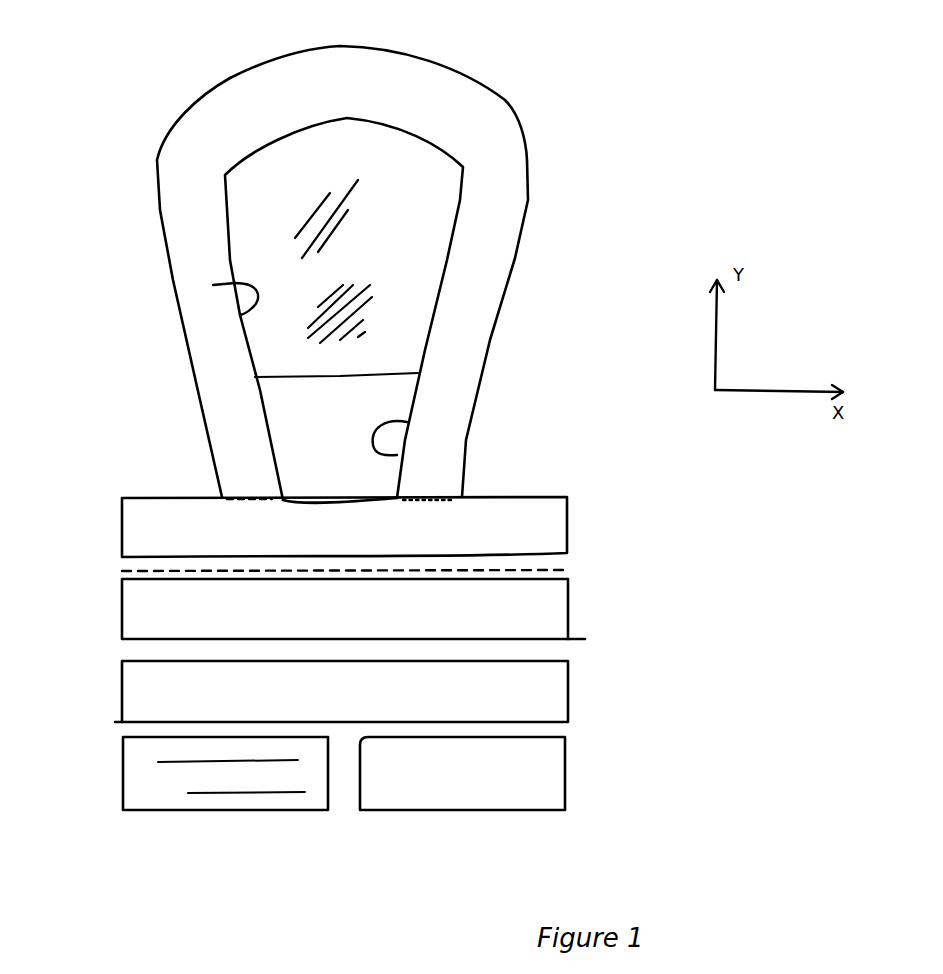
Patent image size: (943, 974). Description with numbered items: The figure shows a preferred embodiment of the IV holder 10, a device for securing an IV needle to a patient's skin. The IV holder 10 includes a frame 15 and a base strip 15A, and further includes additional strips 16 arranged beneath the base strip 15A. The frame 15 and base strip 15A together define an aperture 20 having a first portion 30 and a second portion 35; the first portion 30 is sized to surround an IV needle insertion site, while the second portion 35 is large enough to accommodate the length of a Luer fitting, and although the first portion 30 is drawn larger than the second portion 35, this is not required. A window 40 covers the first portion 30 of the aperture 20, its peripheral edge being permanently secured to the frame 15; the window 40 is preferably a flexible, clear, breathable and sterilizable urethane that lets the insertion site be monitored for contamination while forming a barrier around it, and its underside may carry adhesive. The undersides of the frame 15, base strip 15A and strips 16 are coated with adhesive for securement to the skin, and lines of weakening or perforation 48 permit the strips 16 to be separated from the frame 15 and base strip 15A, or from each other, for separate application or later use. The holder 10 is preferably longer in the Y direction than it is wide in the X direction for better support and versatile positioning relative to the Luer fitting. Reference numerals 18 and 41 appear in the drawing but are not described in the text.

The IV holder 10 is at (123, 96).
The frame 15 is at (420, 90).
The base strip 15A is at (547, 538).
The strips 16 is at (557, 692).
The information field 18 is at (290, 798).
The aperture 20 is at (418, 295).
The first portion 30 is at (217, 285).
The second portion 35 is at (373, 453).
The window 40 is at (435, 208).
The perforation 41 is at (250, 500).
The lines of weakening or perforation 48 is at (130, 573).